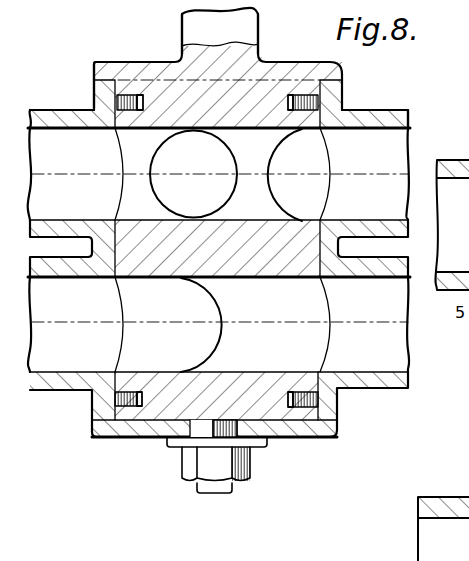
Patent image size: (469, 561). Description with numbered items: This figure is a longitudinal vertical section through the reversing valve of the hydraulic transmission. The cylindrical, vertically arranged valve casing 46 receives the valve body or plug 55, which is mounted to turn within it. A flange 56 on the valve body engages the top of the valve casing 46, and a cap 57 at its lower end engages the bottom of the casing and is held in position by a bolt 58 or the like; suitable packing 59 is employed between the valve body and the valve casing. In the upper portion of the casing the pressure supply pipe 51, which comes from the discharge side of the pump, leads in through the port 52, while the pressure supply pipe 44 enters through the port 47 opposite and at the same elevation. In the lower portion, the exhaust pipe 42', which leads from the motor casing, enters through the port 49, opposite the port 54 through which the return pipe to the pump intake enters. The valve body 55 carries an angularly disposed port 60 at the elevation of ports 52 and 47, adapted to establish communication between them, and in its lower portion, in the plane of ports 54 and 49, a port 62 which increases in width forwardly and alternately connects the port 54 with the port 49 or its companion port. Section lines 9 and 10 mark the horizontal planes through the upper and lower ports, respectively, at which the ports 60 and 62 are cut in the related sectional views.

The section line 9- 9 is at (65, 158).
The section line 10- 10 is at (65, 305).
The pipe 42' is at (365, 404).
The pipe 44 is at (396, 131).
The valve casing 46 is at (338, 98).
The port 47 is at (332, 145).
The port 49 is at (328, 353).
The pressure supply pipe 51 is at (47, 110).
The port 52 is at (117, 155).
The port 54 is at (113, 352).
The valve body or plug 55 is at (260, 95).
The flange 56 is at (96, 63).
The cap 57 is at (308, 433).
The bolt 58 is at (235, 480).
The packing 59 is at (318, 97).
The port 60 is at (287, 197).
The port 62 is at (220, 324).